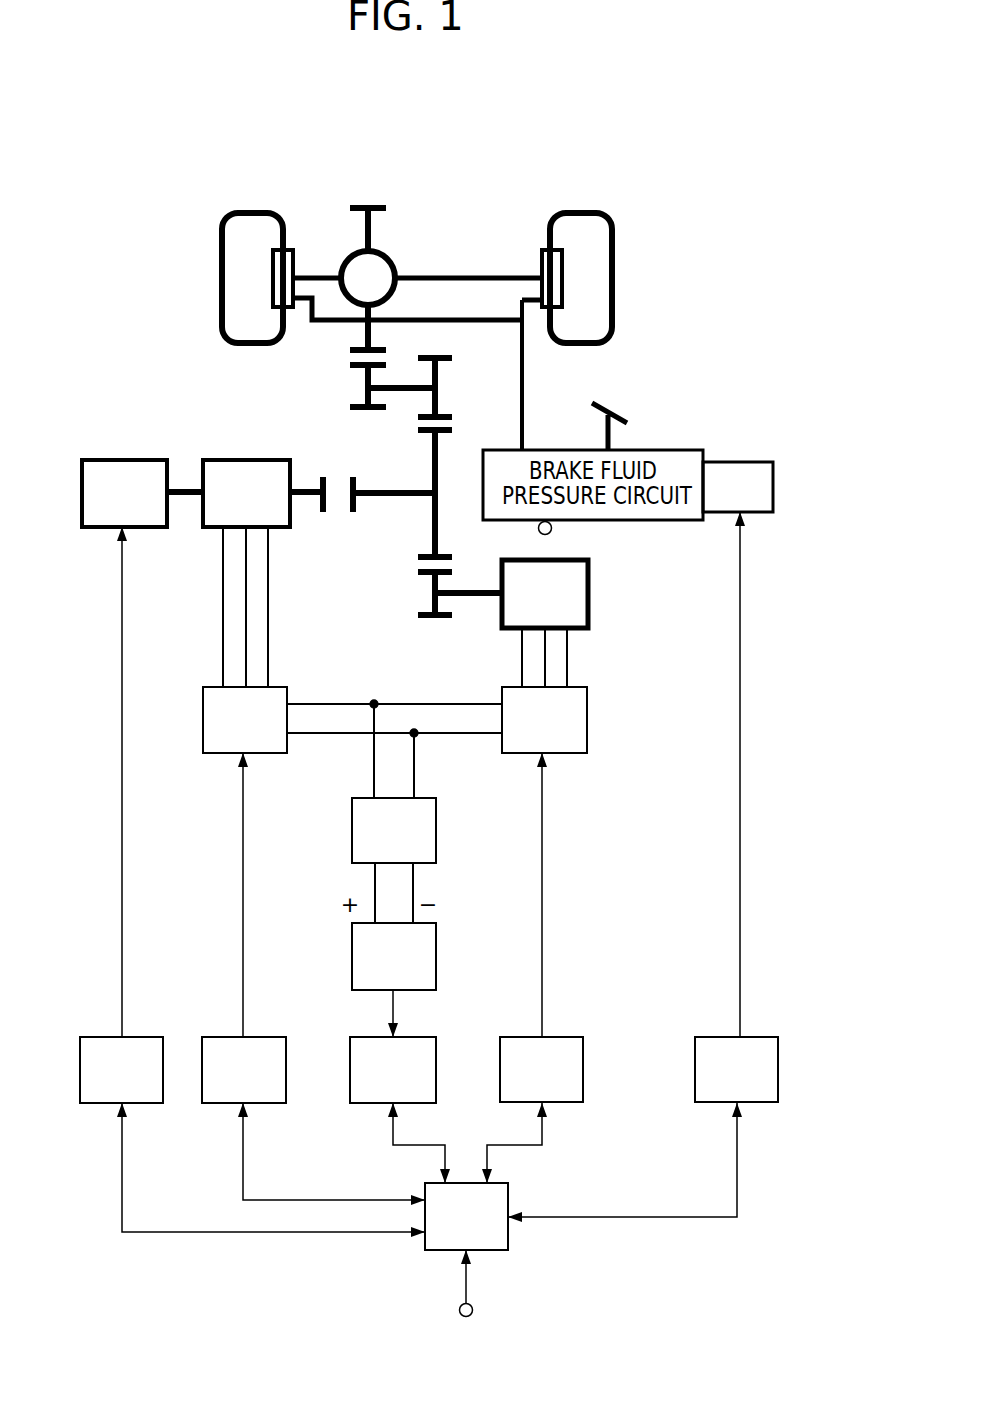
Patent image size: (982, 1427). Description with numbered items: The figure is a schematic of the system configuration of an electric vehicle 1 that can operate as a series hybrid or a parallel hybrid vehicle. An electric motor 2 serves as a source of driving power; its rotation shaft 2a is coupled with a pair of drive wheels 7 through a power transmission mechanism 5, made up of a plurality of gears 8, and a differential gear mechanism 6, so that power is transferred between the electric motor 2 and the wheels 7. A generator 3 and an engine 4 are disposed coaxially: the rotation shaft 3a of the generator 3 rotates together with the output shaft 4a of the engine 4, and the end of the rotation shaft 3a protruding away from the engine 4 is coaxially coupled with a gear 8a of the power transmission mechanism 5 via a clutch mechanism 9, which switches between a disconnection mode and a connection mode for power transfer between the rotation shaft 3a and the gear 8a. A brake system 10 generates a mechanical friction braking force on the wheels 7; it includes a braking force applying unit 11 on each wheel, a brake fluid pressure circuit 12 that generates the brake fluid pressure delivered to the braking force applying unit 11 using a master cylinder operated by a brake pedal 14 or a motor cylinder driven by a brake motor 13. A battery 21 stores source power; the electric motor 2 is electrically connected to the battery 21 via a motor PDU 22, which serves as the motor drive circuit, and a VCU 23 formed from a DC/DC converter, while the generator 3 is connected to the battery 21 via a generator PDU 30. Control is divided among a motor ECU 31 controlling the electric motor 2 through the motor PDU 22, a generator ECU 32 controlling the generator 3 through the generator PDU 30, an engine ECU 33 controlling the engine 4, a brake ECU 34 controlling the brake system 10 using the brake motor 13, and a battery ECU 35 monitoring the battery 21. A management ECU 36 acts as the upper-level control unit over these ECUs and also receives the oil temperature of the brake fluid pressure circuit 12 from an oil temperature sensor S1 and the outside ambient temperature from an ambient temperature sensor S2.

The electric vehicle 1 is at (125, 205).
The electric motor 2 is at (589, 595).
The rotation shaft 2a is at (479, 600).
The generator 3 is at (247, 460).
The rotation shaft 3a is at (307, 490).
The engine 4 is at (123, 460).
The output shaft 4a is at (185, 490).
The power transmission mechanism 5 is at (420, 640).
The differential gear mechanism 6 is at (393, 269).
The wheels 7 is at (252, 213).
The gears 8 is at (370, 348).
The gear 8a is at (432, 445).
The clutch mechanism 9 is at (356, 509).
The brake system 10 is at (768, 545).
The braking force applying unit 11 is at (293, 262).
The brake fluid pressure circuit 12 is at (540, 450).
The brake motor 13 is at (752, 462).
The brake pedal 14 is at (614, 414).
The battery 21 is at (436, 950).
The motor PDU 22 is at (587, 718).
The VCU 23 is at (436, 832).
The generator PDU 30 is at (203, 718).
The motor ECU 31 is at (565, 1037).
The generator ECU 32 is at (273, 1037).
The engine ECU 33 is at (143, 1037).
The brake ECU 34 is at (760, 1037).
The battery ECU 35 is at (423, 1028).
The management ECU 36 is at (508, 1233).
The oil temperature sensor S1 is at (552, 529).
The ambient temperature sensor S2 is at (473, 1311).